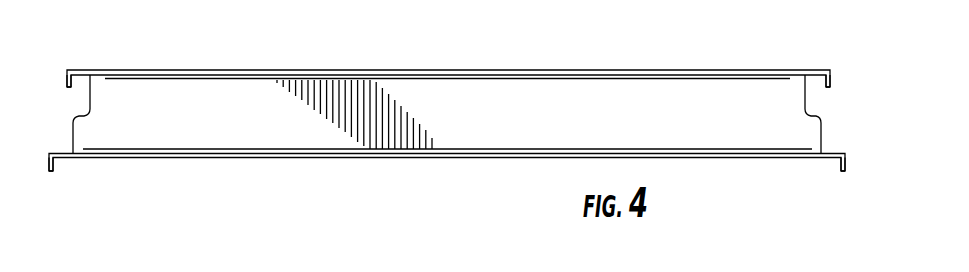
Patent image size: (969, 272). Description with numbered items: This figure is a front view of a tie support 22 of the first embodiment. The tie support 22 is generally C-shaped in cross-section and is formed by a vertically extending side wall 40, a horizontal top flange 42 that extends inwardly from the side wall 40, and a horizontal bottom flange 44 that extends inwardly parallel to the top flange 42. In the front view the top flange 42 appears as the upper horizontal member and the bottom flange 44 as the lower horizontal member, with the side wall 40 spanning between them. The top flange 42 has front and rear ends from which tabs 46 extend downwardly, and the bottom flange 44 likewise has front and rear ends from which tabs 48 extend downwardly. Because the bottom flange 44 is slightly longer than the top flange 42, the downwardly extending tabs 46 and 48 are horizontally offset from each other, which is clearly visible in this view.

The tie support 22 is at (677, 70).
The side wall 40 is at (498, 113).
The top flange 42 is at (215, 70).
The bottom flange 44 is at (252, 158).
The tabs 46 is at (64, 72).
The tabs 48 is at (50, 166).